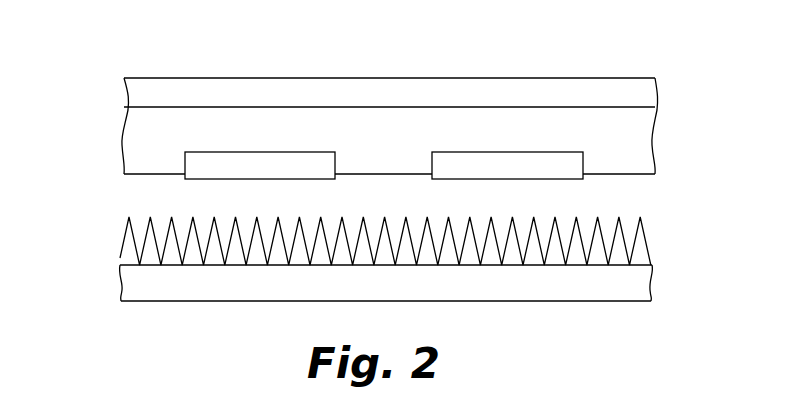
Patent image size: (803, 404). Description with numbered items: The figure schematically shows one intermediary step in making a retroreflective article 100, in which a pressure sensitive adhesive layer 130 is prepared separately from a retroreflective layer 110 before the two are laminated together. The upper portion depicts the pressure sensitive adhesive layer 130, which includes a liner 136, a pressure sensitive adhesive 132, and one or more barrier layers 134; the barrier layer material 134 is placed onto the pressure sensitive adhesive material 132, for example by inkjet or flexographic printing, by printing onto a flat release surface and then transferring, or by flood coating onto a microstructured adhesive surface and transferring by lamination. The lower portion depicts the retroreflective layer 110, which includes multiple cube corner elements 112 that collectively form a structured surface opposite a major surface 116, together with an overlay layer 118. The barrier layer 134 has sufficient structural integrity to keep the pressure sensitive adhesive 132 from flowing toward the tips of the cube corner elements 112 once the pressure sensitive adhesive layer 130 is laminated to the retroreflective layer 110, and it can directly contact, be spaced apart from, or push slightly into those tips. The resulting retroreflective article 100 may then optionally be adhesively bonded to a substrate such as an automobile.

The retroreflective article 100 is at (560, 64).
The retroreflective layer 110 is at (665, 220).
The cube corner elements 112 is at (235, 253).
The major surface 116 is at (557, 266).
The overlay layer 118 is at (132, 288).
The pressure sensitive adhesive layer 130 is at (665, 77).
The pressure sensitive adhesive 132 is at (138, 130).
The barrier layer 134 is at (250, 158).
The liner 136 is at (138, 93).